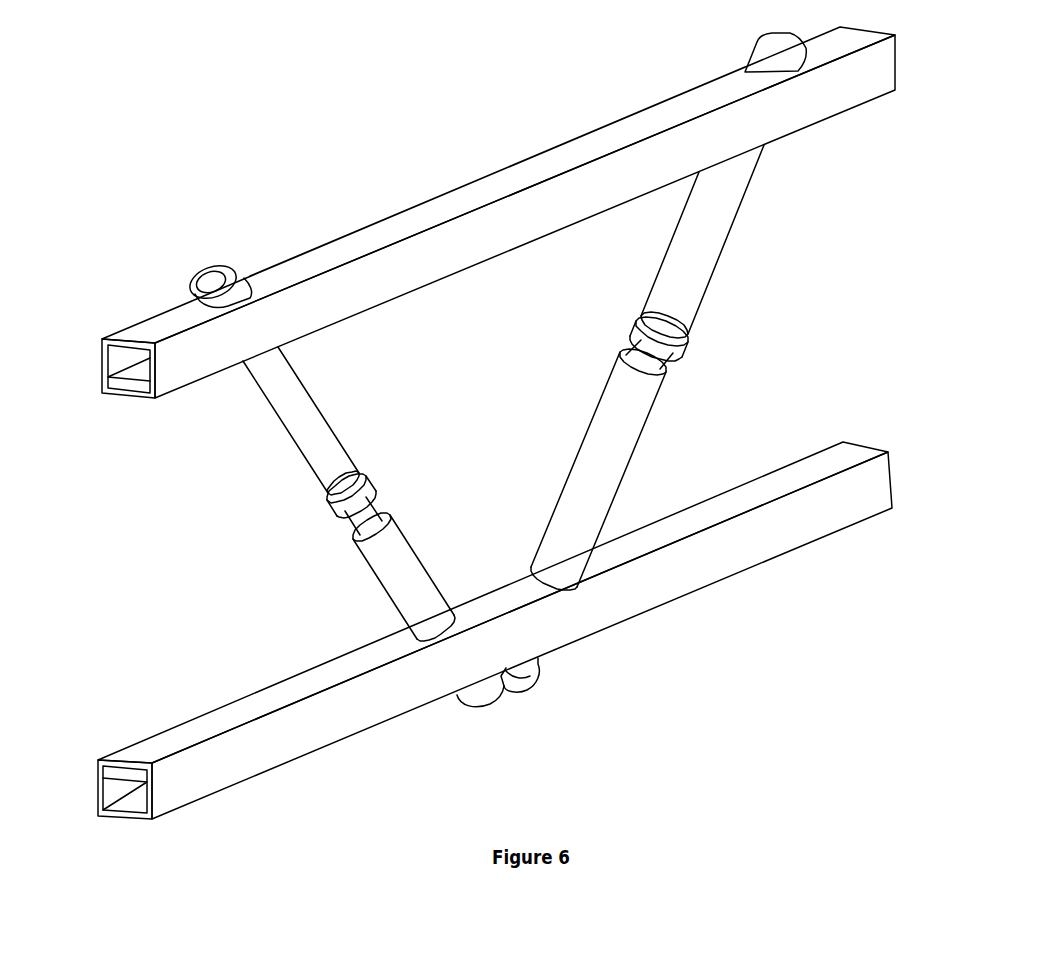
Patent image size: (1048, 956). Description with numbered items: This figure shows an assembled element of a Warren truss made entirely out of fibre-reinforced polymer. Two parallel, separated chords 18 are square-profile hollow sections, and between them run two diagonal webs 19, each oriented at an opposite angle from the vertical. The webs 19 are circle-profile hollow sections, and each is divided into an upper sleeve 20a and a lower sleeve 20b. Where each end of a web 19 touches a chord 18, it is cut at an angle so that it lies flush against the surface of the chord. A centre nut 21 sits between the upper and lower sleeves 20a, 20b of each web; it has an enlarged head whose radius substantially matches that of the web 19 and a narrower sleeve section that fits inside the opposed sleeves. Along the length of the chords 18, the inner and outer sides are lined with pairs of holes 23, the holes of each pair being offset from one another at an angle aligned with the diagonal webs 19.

The chord 18 is at (887, 482).
The diagonal web 19 is at (627, 298).
The upper sleeve 20a is at (682, 273).
The lower sleeve 20b is at (618, 455).
The centre nut 21 is at (353, 520).
The hole 23 is at (252, 357).